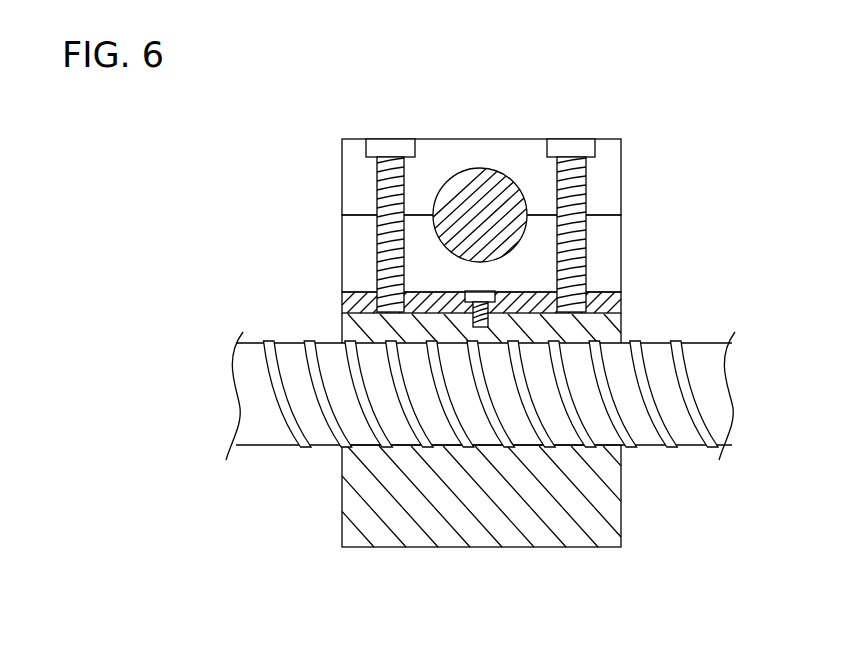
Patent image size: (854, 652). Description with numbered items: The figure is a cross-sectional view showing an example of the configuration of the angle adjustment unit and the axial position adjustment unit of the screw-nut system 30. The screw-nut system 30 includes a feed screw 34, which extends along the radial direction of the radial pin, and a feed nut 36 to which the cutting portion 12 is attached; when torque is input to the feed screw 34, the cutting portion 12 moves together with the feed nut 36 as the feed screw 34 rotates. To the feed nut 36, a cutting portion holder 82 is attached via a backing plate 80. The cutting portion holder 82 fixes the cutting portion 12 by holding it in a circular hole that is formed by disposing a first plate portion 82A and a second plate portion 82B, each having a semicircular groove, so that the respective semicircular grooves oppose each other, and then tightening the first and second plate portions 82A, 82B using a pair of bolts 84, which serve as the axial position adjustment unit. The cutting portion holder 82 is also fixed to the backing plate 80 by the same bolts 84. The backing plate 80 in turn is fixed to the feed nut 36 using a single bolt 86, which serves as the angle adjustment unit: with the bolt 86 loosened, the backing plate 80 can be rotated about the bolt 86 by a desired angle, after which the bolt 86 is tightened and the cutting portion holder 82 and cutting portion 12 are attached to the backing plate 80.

The screw-nut system 30 is at (483, 348).
The cutting portion 12 is at (491, 168).
The feed screw 34 is at (699, 343).
The feed nut 36 is at (621, 535).
The backing plate 80 is at (343, 293).
The cutting portion holder 82 is at (418, 215).
The first plate portion 82A is at (342, 203).
The second plate portion 82B is at (342, 228).
The bolts 84 is at (400, 139).
The bolt 86 is at (493, 290).